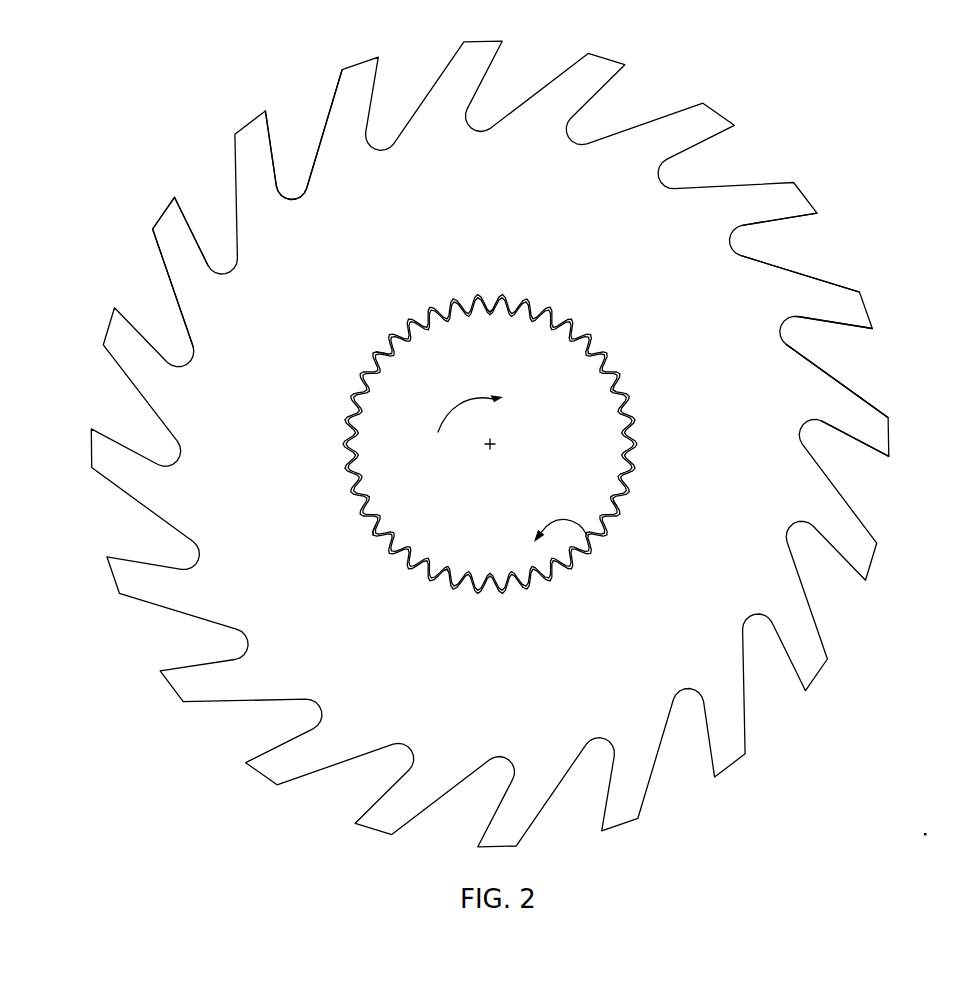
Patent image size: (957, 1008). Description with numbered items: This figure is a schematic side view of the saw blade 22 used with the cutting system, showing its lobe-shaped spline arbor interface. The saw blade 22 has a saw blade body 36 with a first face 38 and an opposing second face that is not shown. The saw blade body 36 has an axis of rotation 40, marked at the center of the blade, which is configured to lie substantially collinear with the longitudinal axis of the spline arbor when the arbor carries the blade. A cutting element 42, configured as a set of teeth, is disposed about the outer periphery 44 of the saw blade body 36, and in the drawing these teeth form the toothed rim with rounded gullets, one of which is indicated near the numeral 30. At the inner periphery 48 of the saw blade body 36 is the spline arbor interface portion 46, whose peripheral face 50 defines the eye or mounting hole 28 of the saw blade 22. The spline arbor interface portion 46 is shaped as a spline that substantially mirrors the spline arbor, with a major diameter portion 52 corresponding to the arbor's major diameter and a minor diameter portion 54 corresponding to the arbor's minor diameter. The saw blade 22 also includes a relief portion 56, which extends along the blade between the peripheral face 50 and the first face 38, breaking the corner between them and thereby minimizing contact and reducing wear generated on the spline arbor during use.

The saw blade 22 is at (722, 112).
The mounting hole 28 is at (553, 582).
The direction of rotation 30 is at (448, 412).
The saw blade body 36 is at (770, 412).
The first face 38 is at (758, 317).
The axis of rotation 40 is at (517, 452).
The cutting element 42 is at (153, 192).
The outer periphery 44 is at (254, 228).
The spline arbor interface portion 46 is at (587, 535).
The inner periphery 48 is at (366, 538).
The peripheral face 50 is at (450, 572).
The major diameter portion 52 is at (500, 325).
The minor diameter portion 54 is at (592, 384).
The relief portion 56 is at (633, 508).